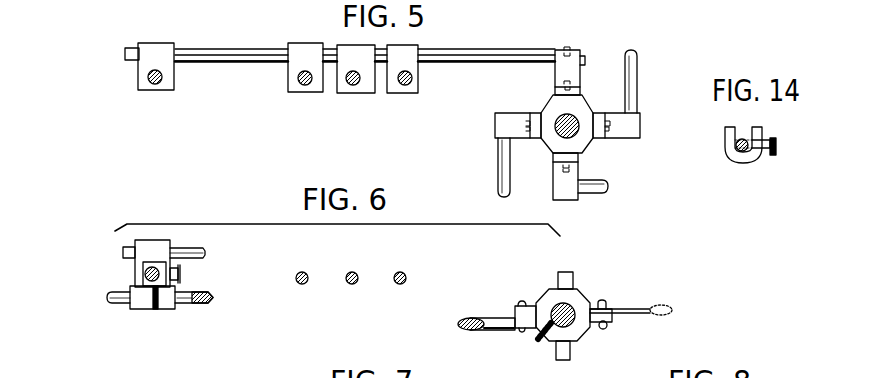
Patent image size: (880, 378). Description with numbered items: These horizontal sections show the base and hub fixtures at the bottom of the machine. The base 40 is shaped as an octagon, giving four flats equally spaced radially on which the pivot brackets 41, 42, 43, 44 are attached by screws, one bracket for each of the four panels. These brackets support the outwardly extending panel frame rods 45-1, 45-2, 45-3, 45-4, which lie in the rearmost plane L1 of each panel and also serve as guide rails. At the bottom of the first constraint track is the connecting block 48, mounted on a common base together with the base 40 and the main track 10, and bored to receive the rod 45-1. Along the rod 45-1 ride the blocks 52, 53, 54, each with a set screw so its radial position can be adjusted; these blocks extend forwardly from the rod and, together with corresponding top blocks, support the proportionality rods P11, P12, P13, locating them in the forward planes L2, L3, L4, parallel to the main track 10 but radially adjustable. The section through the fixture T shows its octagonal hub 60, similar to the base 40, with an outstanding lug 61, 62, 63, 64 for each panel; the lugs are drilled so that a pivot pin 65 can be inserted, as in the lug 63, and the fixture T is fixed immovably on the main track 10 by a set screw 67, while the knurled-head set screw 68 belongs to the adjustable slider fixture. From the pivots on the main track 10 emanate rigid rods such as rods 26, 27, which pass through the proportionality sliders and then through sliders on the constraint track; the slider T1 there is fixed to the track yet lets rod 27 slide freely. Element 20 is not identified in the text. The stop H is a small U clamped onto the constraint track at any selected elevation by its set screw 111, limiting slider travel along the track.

In FIG. 5, the rearmost plane L1 is at (125, 51).
In FIG. 6, the rearmost plane L1 is at (113, 251).
In FIG. 5, the plane of location L2 is at (125, 75).
In FIG. 6, the plane of location L2 is at (113, 273).
In FIG. 6, the plane of location L3 is at (107, 297).
In FIG. 6, the plane of location L4 is at (108, 317).
In FIG. 5, the connecting block 48 is at (139, 78).
In FIG. 5, the block 54 is at (308, 51).
In FIG. 5, the block 53 is at (365, 53).
In FIG. 5, the block 52 is at (412, 54).
In FIG. 5, the panel frame rod 45-1 is at (490, 55).
In FIG. 5, the panel frame rod 45-2 is at (506, 177).
In FIG. 5, the panel frame rod 45-3 is at (605, 184).
In FIG. 5, the panel frame rod 45-4 is at (634, 72).
In FIG. 5, the pivot bracket 42 is at (573, 53).
In FIG. 5, the pivot bracket 41 is at (633, 120).
In FIG. 5, the pivot bracket 43 is at (515, 105).
In FIG. 5, the pivot bracket 44 is at (568, 190).
In FIG. 5, the base 40 is at (582, 112).
In FIG. 5, the main track 10 is at (575, 133).
In FIG. 6, the main track 10 is at (596, 313).
In FIG. 5, the proportionality rod P13 is at (306, 85).
In FIG. 6, the proportionality rod P13 is at (306, 273).
In FIG. 5, the proportionality rod P12 is at (354, 85).
In FIG. 6, the proportionality rod P12 is at (356, 273).
In FIG. 5, the proportionality rod P11 is at (406, 85).
In FIG. 6, the proportionality rod P11 is at (404, 273).
In FIG. 14, the stop H is at (758, 131).
In FIG. 14, the set screw 111 is at (776, 144).
In FIG. 6, the slider T1 is at (153, 311).
In FIG. 6, the rigid rod 27 is at (192, 304).
In FIG. 6, the rigid rod 26 is at (497, 331).
In FIG. 6, the octagonal hub 60 is at (580, 303).
In FIG. 6, the lug 61 is at (612, 318).
In FIG. 6, the lug 62 is at (565, 283).
In FIG. 6, the lug 63 is at (517, 313).
In FIG. 6, the lug 64 is at (563, 358).
In FIG. 6, the pivot pin 65 is at (523, 304).
In FIG. 6, the set screw 67 is at (543, 341).
In FIG. 6, the set screw 68 is at (606, 330).
In FIG. 6, the joint 20 is at (663, 305).
In FIG. 6, the fixture T is at (584, 338).